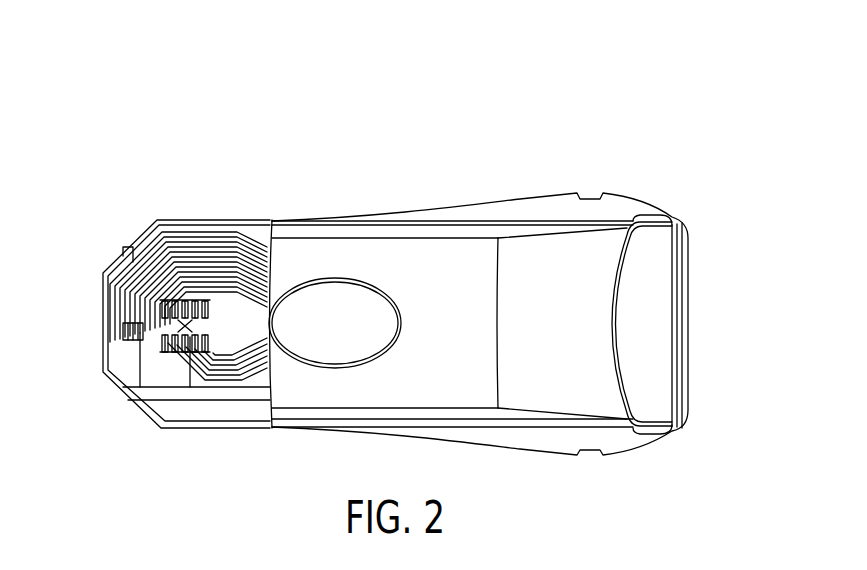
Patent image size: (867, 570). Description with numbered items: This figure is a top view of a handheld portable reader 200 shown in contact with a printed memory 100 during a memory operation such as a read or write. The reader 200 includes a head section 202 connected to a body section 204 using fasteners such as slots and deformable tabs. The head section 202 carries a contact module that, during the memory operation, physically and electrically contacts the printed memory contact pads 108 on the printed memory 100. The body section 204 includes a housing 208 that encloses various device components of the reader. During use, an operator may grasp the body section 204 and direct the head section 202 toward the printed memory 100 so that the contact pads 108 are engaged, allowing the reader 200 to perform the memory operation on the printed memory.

The reader 200 is at (120, 93).
The head section 202 is at (262, 161).
The body section 204 is at (702, 161).
The housing 208 is at (660, 253).
The printed memory 100 is at (160, 335).
The printed memory contact pads 108 is at (185, 338).